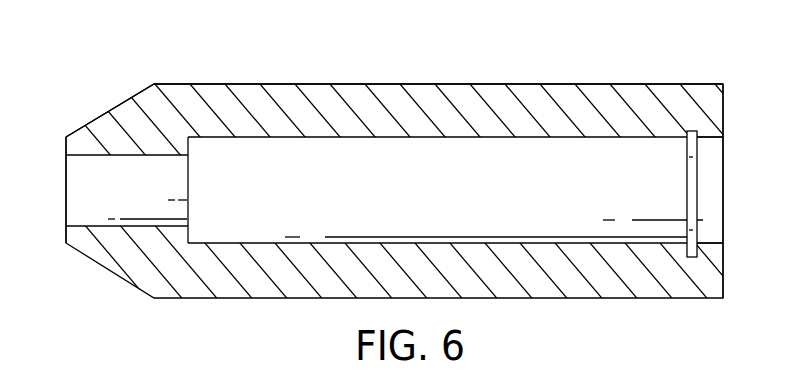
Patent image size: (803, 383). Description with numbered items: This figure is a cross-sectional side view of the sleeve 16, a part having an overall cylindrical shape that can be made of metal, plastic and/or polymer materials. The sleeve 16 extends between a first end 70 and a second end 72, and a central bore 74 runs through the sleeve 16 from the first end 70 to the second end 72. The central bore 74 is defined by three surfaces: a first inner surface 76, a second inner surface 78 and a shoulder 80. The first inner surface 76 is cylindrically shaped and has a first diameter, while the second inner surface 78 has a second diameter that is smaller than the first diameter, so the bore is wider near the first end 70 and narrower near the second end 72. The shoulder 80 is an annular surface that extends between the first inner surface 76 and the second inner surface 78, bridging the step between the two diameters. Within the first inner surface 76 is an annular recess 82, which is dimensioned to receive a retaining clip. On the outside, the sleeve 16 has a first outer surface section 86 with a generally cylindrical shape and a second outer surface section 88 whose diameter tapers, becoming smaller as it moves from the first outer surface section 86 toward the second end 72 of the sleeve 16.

The sleeve 16 is at (294, 50).
The first end 70 is at (723, 112).
The second end 72 is at (65, 147).
The central bore 74 is at (708, 163).
The first inner surface 76 is at (500, 138).
The second inner surface 78 is at (93, 225).
The shoulder 80 is at (190, 147).
The annular recess 82 is at (688, 192).
The first outer surface section 86 is at (563, 84).
The second outer surface section 88 is at (100, 112).